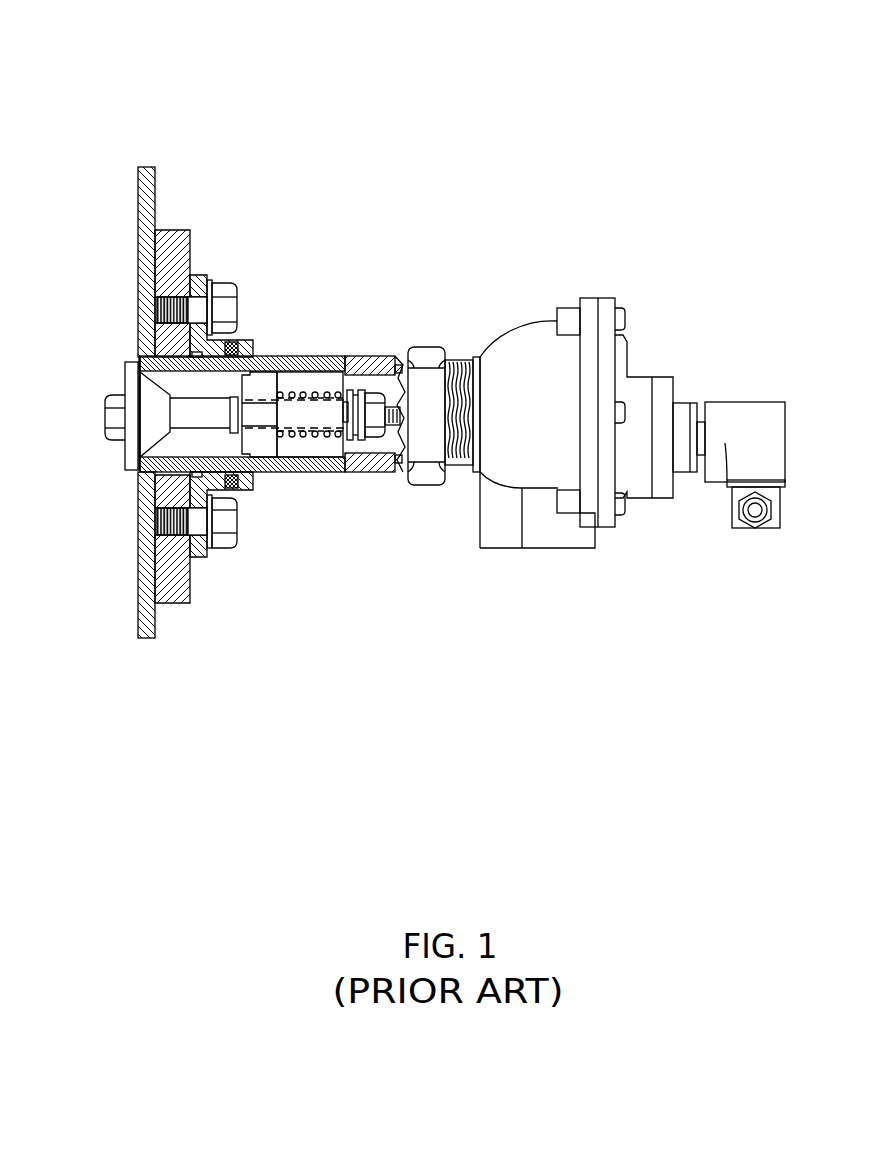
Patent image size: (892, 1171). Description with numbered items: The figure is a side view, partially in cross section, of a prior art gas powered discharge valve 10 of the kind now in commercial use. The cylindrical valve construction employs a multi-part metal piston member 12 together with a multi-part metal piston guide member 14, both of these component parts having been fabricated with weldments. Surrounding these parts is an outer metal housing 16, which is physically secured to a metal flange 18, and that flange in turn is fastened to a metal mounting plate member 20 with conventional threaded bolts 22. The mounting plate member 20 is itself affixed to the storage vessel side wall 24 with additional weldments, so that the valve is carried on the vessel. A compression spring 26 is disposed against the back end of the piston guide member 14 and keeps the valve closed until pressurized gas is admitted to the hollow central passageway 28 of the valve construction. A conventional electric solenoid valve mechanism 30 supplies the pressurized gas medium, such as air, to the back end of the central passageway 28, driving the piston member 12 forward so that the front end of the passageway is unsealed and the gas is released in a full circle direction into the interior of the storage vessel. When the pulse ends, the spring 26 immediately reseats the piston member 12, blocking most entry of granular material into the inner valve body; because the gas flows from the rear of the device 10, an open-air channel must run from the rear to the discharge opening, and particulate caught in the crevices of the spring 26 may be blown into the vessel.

The gas powered discharge valve 10 is at (496, 50).
The piston member 12 is at (154, 392).
The piston guide member 14 is at (272, 387).
The outer metal housing 16 is at (416, 393).
The metal flange 18 is at (224, 387).
The mounting plate member 20 is at (199, 388).
The threaded bolts 22 is at (223, 402).
The storage vessel side wall 24 is at (173, 382).
The compression spring 26 is at (333, 350).
The hollow central passageway 28 is at (140, 464).
The electric solenoid valve mechanism 30 is at (632, 395).